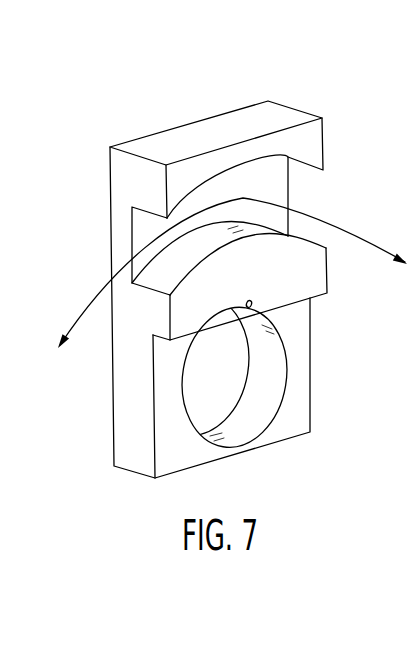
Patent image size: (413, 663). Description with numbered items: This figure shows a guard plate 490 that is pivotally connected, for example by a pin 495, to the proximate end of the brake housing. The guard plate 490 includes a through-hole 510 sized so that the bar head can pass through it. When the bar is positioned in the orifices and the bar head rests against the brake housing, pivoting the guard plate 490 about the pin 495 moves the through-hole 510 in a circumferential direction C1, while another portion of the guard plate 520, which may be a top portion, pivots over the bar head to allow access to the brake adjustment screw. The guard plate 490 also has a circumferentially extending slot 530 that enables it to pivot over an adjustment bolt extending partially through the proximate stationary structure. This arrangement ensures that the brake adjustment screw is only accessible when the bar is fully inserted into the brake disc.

The guard plate 490 is at (248, 453).
The pin 495 is at (247, 307).
The through-hole 510 is at (257, 410).
The top portion of the guard plate 520 is at (306, 146).
The circumferentially extending slot 530 is at (289, 183).
The circumferential direction C1 is at (374, 250).